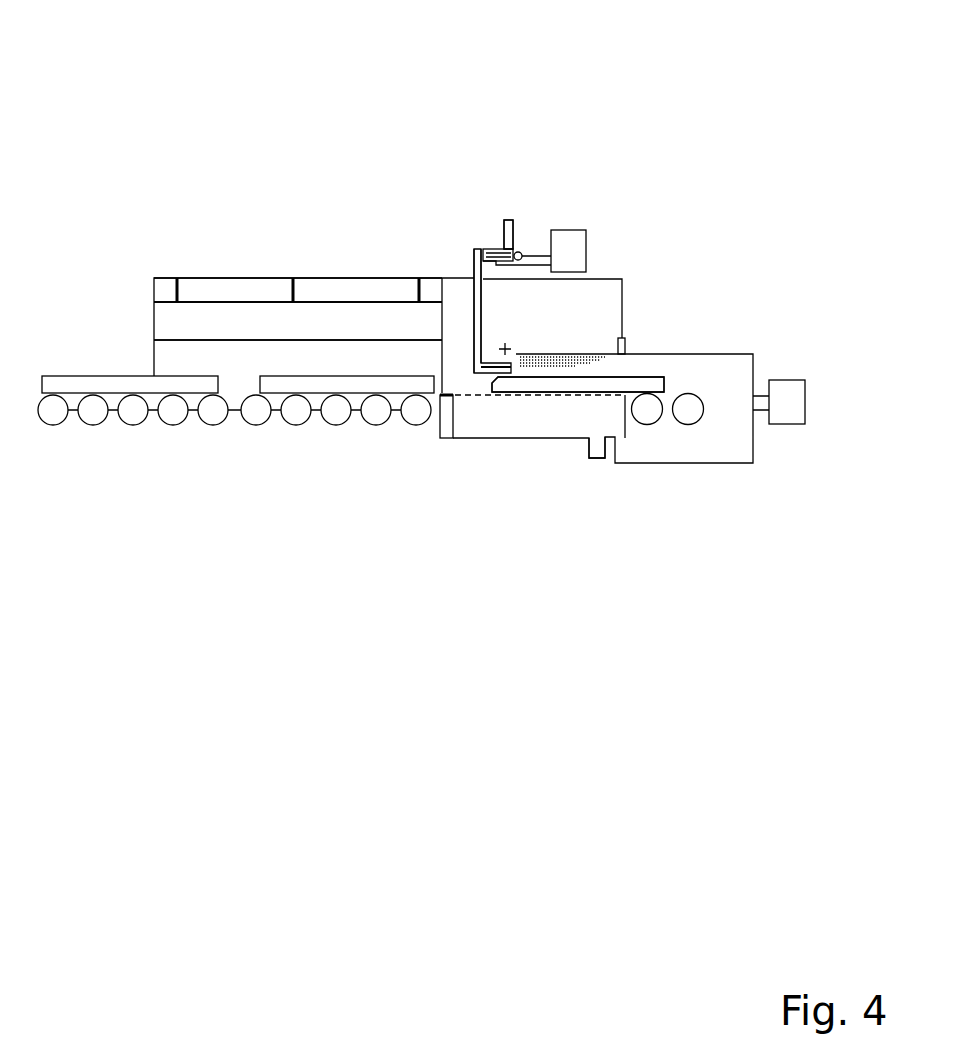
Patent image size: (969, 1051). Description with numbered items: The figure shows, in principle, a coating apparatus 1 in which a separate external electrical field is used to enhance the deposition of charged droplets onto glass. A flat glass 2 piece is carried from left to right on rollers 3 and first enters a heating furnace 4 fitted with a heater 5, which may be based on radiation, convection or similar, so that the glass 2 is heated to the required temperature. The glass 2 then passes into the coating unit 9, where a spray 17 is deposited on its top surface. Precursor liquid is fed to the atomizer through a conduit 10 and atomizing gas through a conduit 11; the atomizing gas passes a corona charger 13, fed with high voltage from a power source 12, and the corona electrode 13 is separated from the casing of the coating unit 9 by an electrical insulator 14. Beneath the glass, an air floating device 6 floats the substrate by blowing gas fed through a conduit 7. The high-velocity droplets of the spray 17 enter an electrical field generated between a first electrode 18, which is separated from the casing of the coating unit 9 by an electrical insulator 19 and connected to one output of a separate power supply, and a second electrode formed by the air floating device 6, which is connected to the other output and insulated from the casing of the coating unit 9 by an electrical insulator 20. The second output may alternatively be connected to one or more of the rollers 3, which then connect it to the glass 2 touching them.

The coating apparatus 1 is at (299, 303).
The glass 2 is at (135, 375).
The rollers 3 is at (129, 432).
The heating furnace 4 is at (235, 270).
The heater 5 is at (325, 320).
The air floating device 6 is at (477, 443).
The conduit 7 is at (596, 462).
The coating unit 9 is at (457, 267).
The conduit 10 is at (477, 249).
The conduit 11 is at (506, 233).
The power source 12 is at (570, 230).
The corona charger 13 is at (534, 250).
The electrical insulator 14 is at (521, 238).
The spray 17 is at (548, 368).
The first electrode 18 is at (567, 350).
The electrical insulator 19 is at (628, 337).
The electrical insulator 20 is at (430, 430).